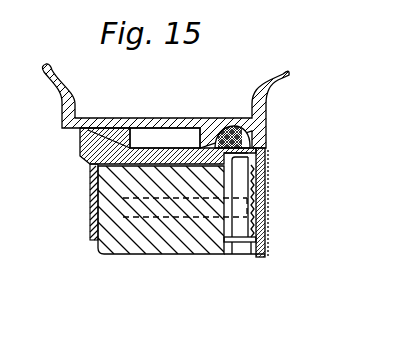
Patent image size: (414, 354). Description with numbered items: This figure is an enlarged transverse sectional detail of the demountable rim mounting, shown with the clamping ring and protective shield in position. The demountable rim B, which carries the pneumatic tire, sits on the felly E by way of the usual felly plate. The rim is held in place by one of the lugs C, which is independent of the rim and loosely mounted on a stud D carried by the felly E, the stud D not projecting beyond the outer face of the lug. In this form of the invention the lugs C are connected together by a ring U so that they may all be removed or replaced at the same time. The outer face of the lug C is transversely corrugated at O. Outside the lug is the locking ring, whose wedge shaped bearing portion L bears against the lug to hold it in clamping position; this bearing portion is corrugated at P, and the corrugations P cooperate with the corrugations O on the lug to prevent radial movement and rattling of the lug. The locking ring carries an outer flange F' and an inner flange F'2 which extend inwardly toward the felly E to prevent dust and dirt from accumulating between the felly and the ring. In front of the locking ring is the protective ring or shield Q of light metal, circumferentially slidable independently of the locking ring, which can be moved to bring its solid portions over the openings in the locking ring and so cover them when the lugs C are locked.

The demountable rim B is at (165, 118).
The ring U is at (250, 138).
The lugs C is at (266, 163).
The studs D is at (137, 213).
The felly E is at (130, 244).
The corrugations P is at (268, 178).
The wedge shaped bearing portions L is at (250, 215).
The protective ring or shield Q is at (268, 208).
The corrugations O is at (251, 197).
The outer flange F' is at (297, 204).
The inner flange F'2 is at (264, 268).